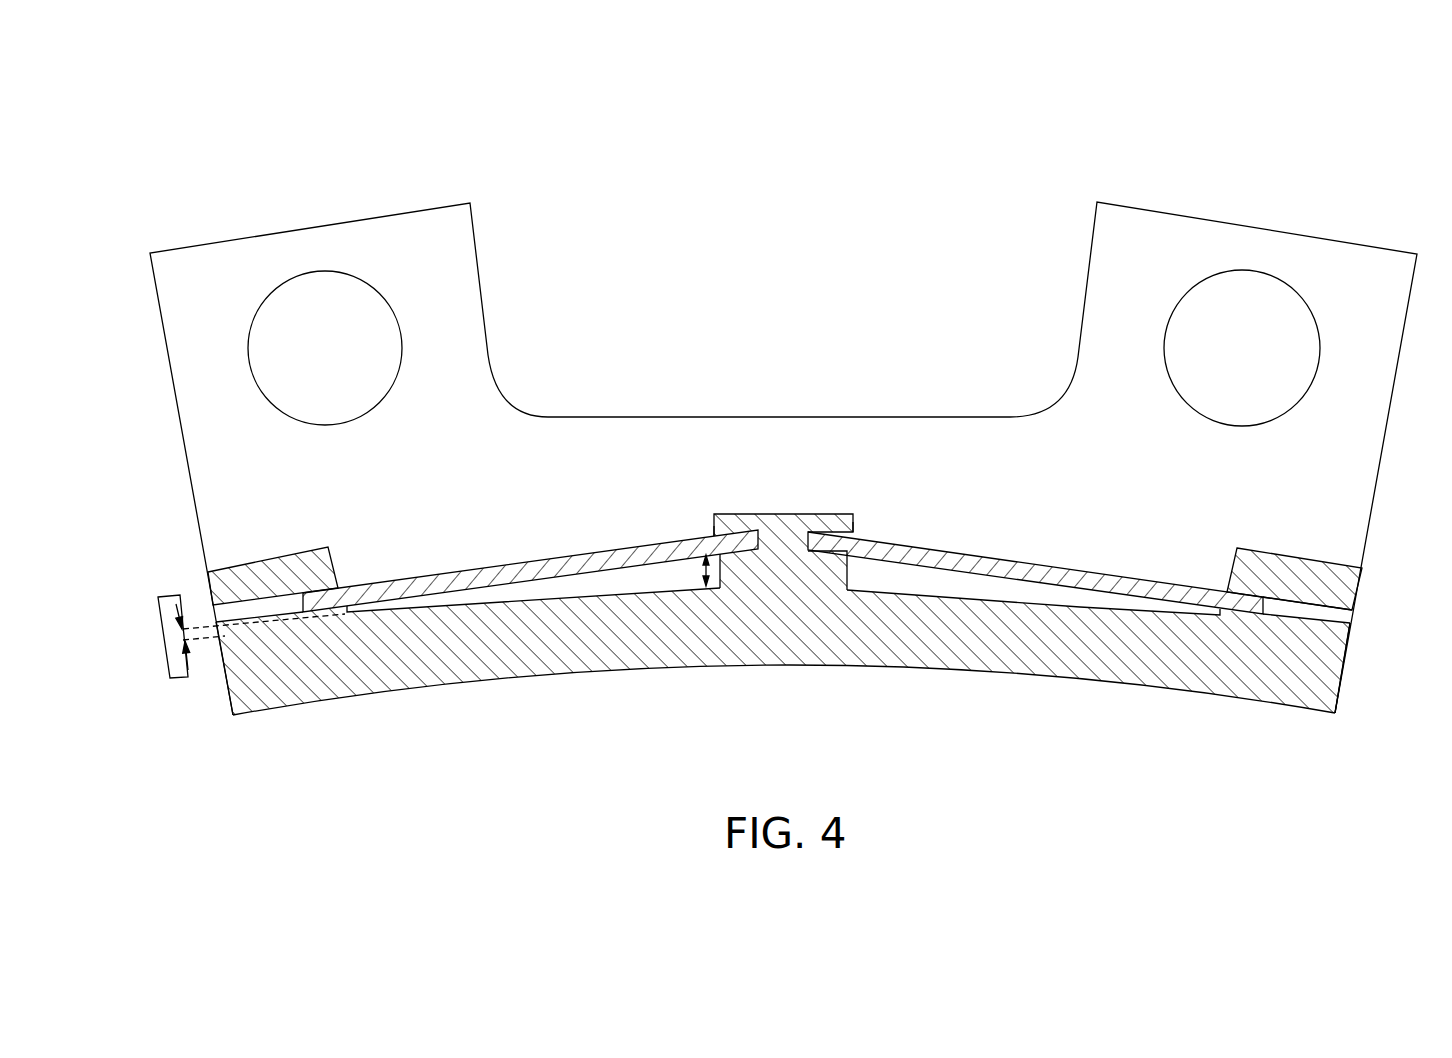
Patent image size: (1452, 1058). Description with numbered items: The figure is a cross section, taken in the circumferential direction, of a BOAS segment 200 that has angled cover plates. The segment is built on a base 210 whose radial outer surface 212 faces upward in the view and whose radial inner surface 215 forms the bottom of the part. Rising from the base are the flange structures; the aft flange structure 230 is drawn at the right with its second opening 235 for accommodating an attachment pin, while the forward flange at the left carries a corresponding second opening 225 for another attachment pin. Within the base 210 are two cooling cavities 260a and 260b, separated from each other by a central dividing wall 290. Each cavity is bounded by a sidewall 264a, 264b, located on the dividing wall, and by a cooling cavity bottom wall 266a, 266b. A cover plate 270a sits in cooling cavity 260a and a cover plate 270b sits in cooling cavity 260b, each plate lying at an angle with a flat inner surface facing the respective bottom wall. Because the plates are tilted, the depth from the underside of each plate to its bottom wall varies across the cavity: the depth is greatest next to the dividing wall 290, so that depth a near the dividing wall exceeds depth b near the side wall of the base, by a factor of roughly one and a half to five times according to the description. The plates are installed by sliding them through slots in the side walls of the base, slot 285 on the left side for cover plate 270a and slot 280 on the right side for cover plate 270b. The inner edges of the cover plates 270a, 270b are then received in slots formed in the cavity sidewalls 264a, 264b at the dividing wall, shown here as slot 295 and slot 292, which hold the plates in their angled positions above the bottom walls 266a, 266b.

The BOAS segment 200 is at (240, 133).
The base 210 is at (1343, 697).
The radial outer surface 212 is at (1318, 565).
The radial inner surface 215 is at (1247, 700).
The second opening 225 is at (313, 269).
The aft flange structure 230 is at (1117, 203).
The second opening 235 is at (1255, 270).
The cooling cavity 260a is at (500, 612).
The cooling cavity 260b is at (1122, 612).
The sidewall 264a is at (727, 580).
The sidewall 264b is at (848, 580).
The cooling cavity bottom wall 266a is at (615, 597).
The cooling cavity bottom wall 266b is at (1010, 617).
The cover plate 270a is at (520, 562).
The cover plate 270b is at (1045, 567).
The slot 280 is at (1352, 617).
The slot 285 is at (206, 592).
The dividing wall 290 is at (765, 514).
The slot 292 is at (856, 535).
The slot 295 is at (712, 535).
The depth a is at (704, 588).
The depth b is at (160, 637).